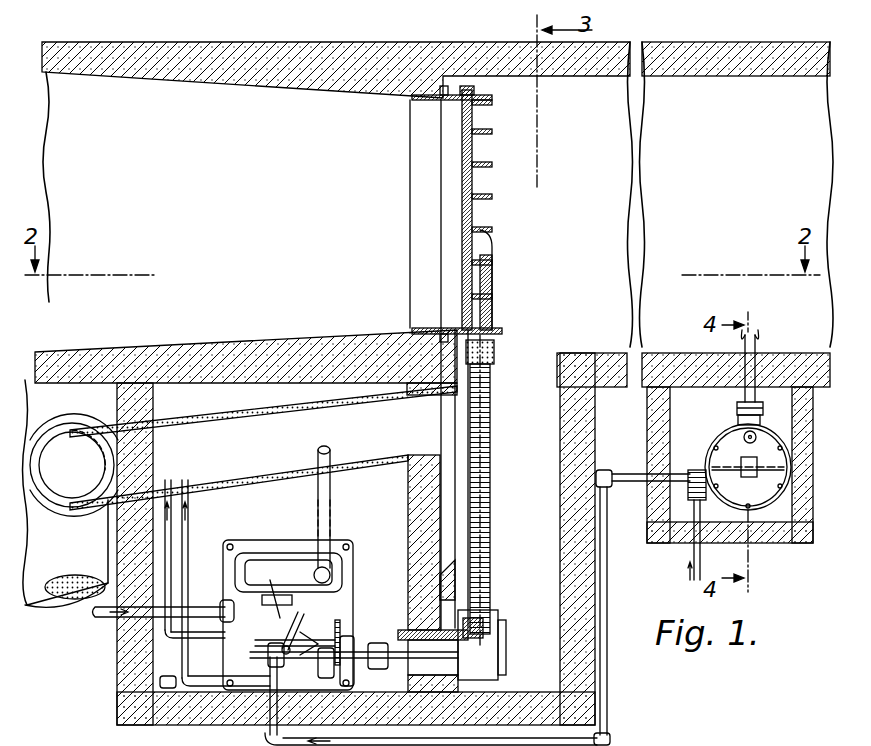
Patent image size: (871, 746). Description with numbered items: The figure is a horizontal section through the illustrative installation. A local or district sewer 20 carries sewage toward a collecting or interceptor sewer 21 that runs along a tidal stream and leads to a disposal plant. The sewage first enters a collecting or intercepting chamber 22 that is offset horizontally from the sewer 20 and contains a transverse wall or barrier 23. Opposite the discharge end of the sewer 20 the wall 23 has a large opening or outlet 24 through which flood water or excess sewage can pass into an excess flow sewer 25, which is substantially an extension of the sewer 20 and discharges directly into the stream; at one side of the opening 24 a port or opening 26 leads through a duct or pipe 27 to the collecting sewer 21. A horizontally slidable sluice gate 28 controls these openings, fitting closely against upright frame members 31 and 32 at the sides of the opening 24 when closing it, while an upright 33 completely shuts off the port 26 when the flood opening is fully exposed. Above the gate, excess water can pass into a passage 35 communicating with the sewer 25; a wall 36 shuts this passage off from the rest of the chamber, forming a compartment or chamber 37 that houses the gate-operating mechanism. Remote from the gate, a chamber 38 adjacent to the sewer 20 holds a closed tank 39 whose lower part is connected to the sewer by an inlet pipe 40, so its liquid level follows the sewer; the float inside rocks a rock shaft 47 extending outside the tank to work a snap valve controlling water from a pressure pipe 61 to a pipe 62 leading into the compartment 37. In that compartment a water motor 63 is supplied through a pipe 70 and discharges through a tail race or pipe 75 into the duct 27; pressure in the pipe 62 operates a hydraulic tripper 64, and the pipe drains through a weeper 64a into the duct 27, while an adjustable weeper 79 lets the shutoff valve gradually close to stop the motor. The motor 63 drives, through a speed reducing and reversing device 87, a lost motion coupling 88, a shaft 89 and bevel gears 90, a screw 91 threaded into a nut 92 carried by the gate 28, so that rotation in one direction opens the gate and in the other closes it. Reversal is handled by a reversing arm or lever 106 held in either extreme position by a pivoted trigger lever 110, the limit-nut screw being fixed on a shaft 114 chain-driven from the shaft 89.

The local or district sewer 20 is at (718, 172).
The collecting or interceptor sewer 21 is at (66, 493).
The collecting or intercepting chamber 22 is at (526, 325).
The transverse wall or barrier 23 is at (408, 560).
The opening or outlet 24 is at (429, 214).
The excess flow sewer 25 is at (112, 238).
The port or opening 26 is at (436, 479).
The duct or pipe 27 is at (74, 465).
The movable sluice gate 28 is at (478, 220).
The upright frame member 31 is at (452, 97).
The upright frame member 32 is at (445, 326).
The upright 33 is at (460, 570).
The passage 35 is at (258, 192).
The wall 36 is at (255, 348).
The compartment or chamber 37 is at (288, 593).
The chamber 38 is at (768, 545).
The closed tank 39 is at (727, 436).
The inlet pipe 40 is at (758, 345).
The rock shaft 47 is at (765, 477).
The pipe 61 is at (702, 560).
The pipe 62 is at (609, 595).
The water motor 63 is at (255, 565).
The hydraulic tripper 64 is at (248, 637).
The weeper 64a is at (178, 680).
The pipe 70 is at (160, 617).
The tail race or pipe 75 is at (332, 447).
The adjustable weeper 79 is at (190, 527).
The speed reducing and reversing device 87 is at (297, 643).
The lost motion coupling 88 is at (331, 664).
The shaft 89 is at (354, 668).
The bevel gears 90 is at (468, 632).
The screw 91 is at (486, 452).
The nut 92 is at (492, 352).
The reversing arm or lever 106 is at (300, 645).
The pivoted member or lever 110 is at (272, 606).
The shaft 114 is at (334, 640).